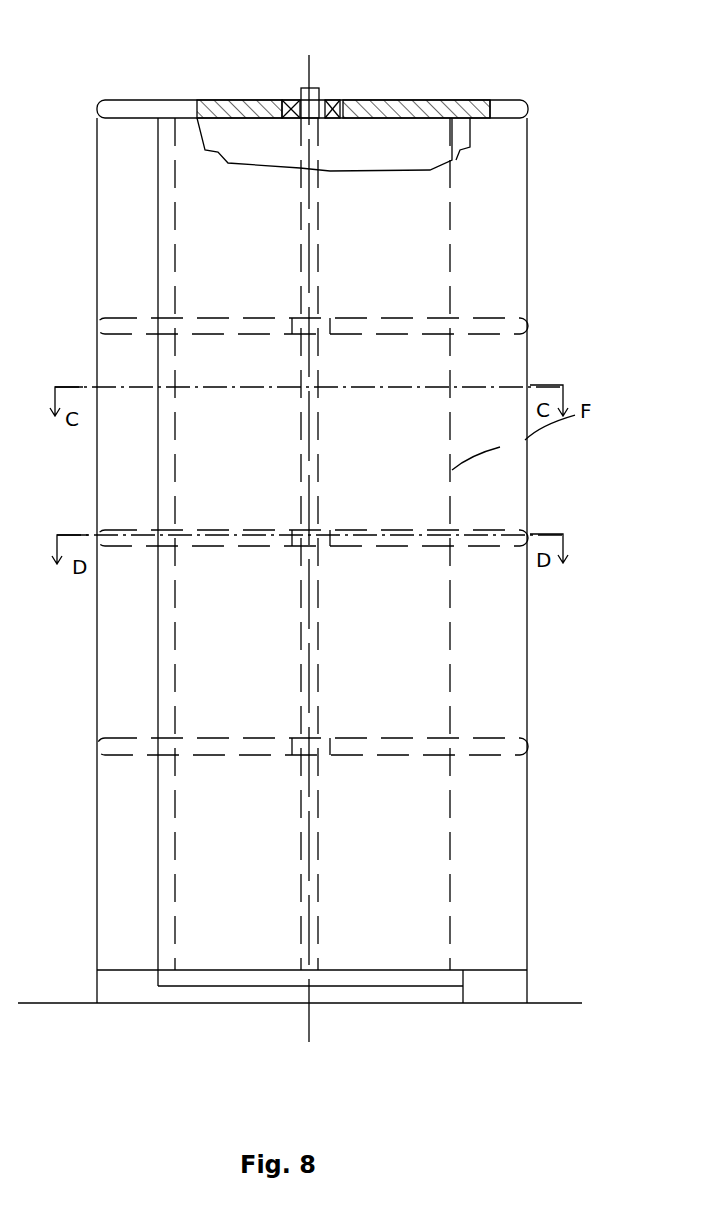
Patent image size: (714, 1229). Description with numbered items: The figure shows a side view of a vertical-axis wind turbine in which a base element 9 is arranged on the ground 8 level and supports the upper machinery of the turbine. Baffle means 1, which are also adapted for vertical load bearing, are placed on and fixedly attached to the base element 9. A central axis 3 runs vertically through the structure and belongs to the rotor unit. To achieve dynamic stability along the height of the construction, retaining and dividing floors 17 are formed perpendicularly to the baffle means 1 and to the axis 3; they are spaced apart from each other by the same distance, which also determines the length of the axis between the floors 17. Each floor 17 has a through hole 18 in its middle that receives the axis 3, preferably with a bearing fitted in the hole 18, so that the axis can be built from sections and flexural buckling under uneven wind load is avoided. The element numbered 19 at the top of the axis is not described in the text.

The baffle means 1 is at (535, 200).
The axis 3 is at (323, 150).
The ground 8 is at (545, 1002).
The base element 9 is at (508, 985).
The retaining and dividing floor 17 is at (525, 97).
The through hole 18 is at (335, 537).
The nut 19 is at (329, 100).